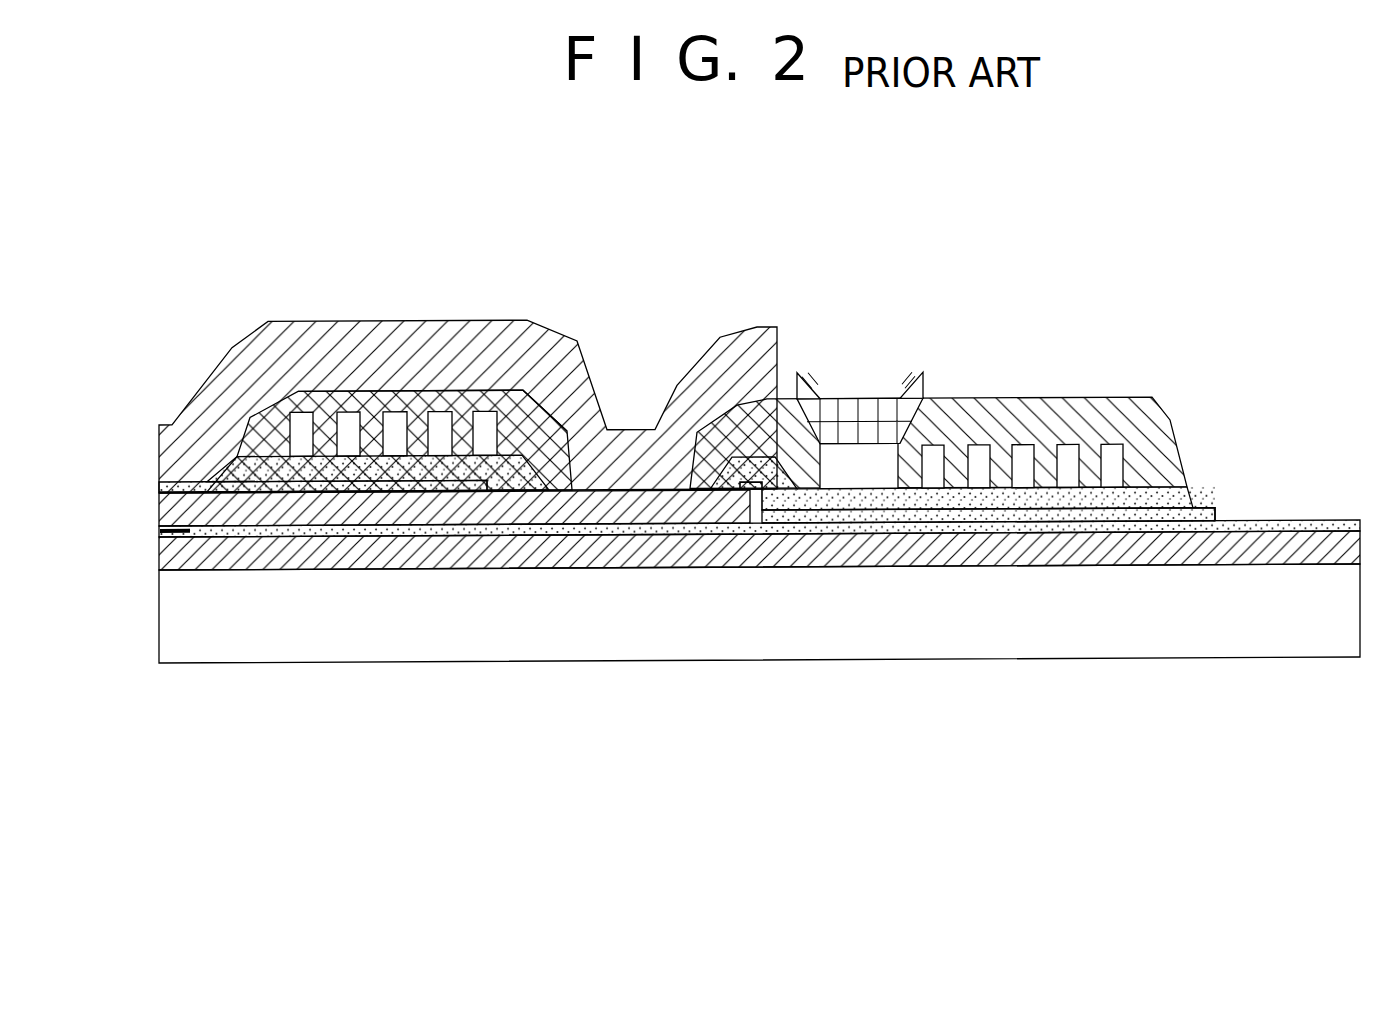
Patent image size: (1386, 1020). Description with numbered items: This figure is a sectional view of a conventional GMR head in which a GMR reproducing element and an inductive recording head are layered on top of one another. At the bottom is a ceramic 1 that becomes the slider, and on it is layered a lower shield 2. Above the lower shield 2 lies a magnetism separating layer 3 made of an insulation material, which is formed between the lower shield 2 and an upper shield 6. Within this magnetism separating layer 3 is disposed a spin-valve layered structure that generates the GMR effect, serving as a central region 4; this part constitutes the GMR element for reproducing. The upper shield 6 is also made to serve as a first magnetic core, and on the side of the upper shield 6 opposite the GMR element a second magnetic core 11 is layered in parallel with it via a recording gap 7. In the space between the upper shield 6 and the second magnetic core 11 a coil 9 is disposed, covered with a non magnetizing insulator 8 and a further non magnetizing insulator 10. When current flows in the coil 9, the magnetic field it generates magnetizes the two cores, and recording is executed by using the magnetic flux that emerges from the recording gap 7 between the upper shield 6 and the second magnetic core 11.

The ceramic 1 is at (222, 650).
The lower shield 2 is at (255, 559).
The magnetism separating layer 3 is at (377, 537).
The central region 4 is at (160, 533).
The upper shield 6 is at (162, 517).
The recording gap 7 is at (158, 486).
The non magnetizing insulator 8 is at (433, 470).
The coil 9 is at (527, 392).
The non magnetizing insulator 10 is at (397, 395).
The second magnetic core 11 is at (341, 326).